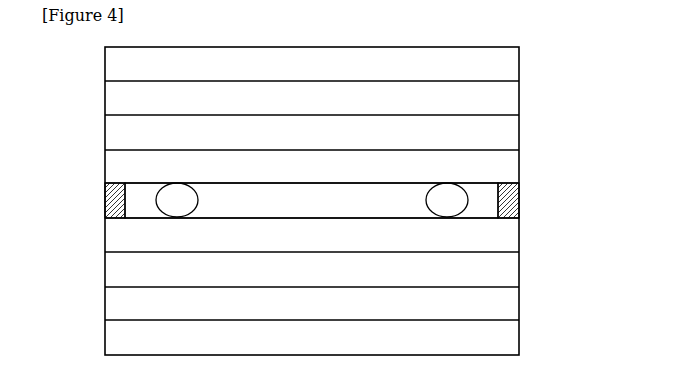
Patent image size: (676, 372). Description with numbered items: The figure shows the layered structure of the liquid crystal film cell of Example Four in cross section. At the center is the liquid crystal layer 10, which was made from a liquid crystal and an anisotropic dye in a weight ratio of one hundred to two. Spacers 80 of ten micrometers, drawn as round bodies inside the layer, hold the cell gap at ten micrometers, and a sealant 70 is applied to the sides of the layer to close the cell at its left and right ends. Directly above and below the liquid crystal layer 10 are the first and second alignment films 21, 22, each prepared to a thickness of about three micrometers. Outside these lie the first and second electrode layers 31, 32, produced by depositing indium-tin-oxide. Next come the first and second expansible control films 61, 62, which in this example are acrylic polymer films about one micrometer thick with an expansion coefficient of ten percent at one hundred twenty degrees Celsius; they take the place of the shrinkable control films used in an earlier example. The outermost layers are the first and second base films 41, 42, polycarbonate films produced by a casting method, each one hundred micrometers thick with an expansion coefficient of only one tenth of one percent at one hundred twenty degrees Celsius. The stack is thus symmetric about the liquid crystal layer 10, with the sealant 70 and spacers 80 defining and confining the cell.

The liquid crystal layer 10 is at (490, 192).
The first alignment film 21 is at (510, 165).
The second alignment film 22 is at (510, 237).
The first electrode layer 31 is at (510, 131).
The second electrode layer 32 is at (510, 272).
The first base film 41 is at (510, 64).
The second base film 42 is at (510, 336).
The first expansible control film 61 is at (510, 98).
The second expansible control film 62 is at (510, 302).
The sealant 70 is at (113, 199).
The spacer 80 is at (190, 200).